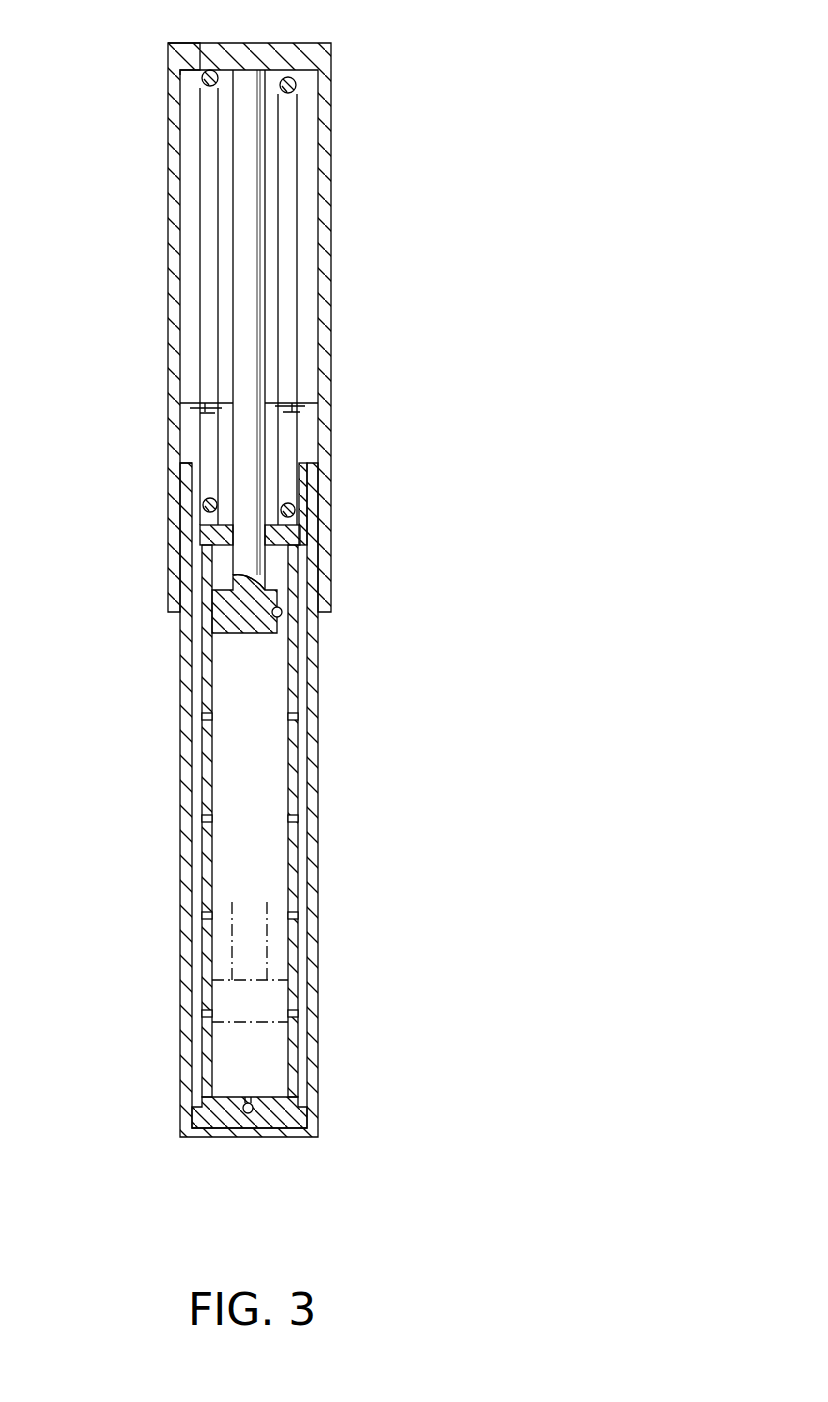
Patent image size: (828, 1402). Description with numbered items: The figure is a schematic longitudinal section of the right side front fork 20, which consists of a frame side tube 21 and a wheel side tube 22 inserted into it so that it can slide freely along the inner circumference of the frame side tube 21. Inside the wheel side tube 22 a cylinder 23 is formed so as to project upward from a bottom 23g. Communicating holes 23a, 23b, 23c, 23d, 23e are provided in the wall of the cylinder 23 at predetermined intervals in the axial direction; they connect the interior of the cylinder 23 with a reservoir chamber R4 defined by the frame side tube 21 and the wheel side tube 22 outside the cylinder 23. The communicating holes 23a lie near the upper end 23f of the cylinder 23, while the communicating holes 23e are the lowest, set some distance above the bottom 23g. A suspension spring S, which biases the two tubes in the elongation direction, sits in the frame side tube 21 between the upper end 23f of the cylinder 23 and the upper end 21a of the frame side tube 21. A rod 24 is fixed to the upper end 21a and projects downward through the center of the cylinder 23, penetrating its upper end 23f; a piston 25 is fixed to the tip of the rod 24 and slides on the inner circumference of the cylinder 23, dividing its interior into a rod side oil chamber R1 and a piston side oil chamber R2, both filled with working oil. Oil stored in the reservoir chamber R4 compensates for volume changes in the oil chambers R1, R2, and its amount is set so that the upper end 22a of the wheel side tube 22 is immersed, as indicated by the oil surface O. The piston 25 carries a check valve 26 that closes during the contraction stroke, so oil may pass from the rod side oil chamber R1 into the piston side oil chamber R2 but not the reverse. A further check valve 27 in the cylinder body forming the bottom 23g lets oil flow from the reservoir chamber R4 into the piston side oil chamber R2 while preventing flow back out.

The right side front fork 20 is at (430, 52).
The frame side tube 21 is at (332, 383).
The upper end of the frame side tube 21a is at (180, 66).
The wheel side tube 22 is at (316, 1131).
The upper end of the wheel side tube 22a is at (181, 449).
The cylinder 23 is at (204, 749).
The communicating holes 23a is at (298, 540).
The communicating holes 23b is at (205, 717).
The communicating holes 23c is at (205, 819).
The communicating holes 23d is at (205, 916).
The communicating holes 23e is at (205, 1014).
The upper end of the cylinder 23f is at (306, 492).
The bottom of the cylinder 23g is at (284, 1107).
The rod 24 is at (267, 286).
The piston 25 is at (237, 634).
The check valve 26 is at (282, 617).
The check valve 27 is at (252, 1115).
The oil surface O is at (192, 401).
The suspension spring S is at (296, 85).
The rod side oil chamber R1 is at (286, 568).
The piston side oil chamber R2 is at (266, 782).
The reservoir chamber R4 is at (197, 785).